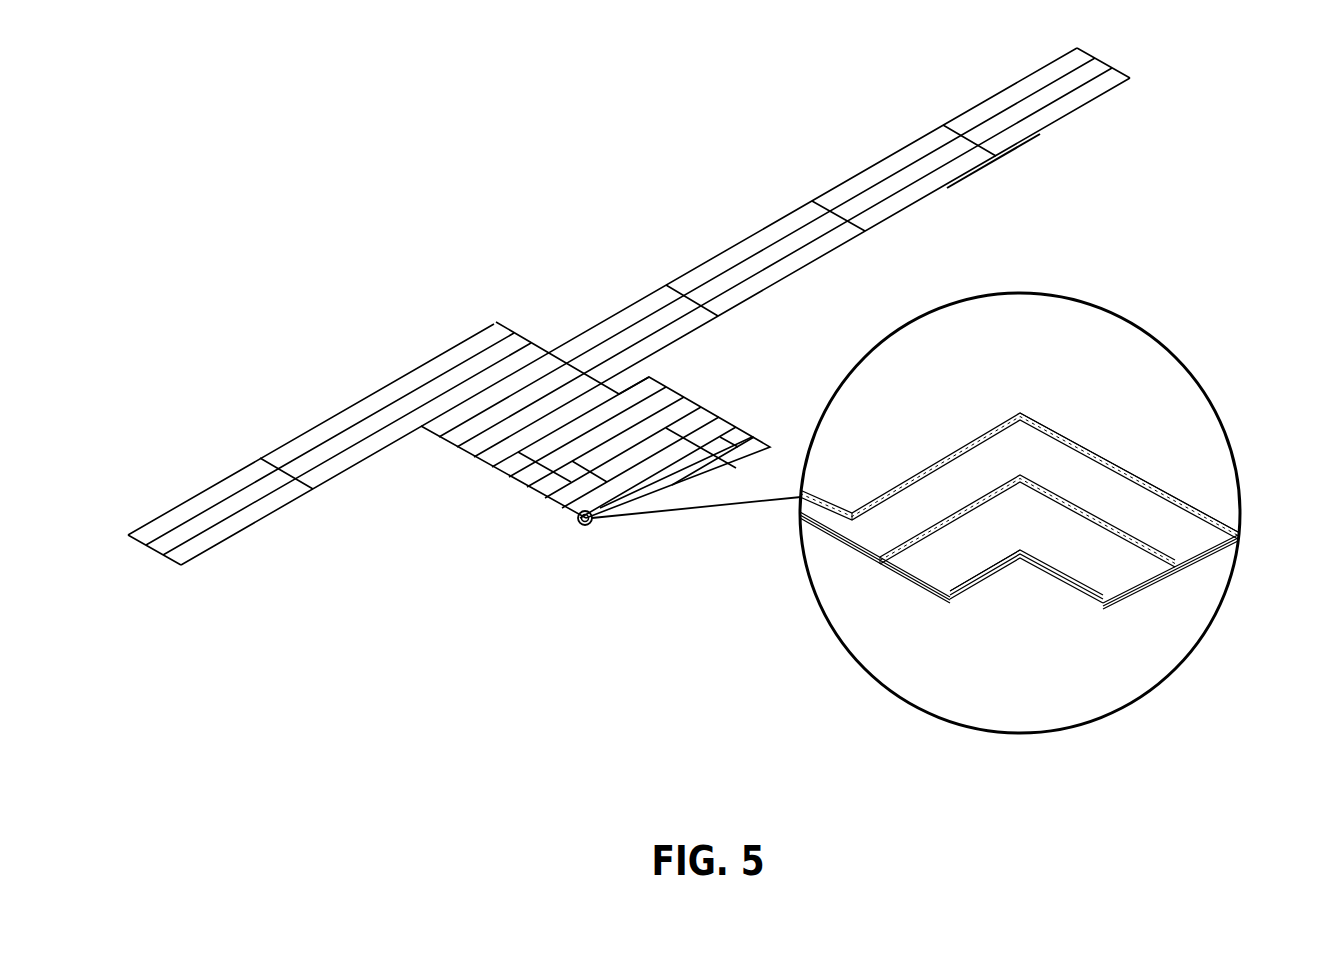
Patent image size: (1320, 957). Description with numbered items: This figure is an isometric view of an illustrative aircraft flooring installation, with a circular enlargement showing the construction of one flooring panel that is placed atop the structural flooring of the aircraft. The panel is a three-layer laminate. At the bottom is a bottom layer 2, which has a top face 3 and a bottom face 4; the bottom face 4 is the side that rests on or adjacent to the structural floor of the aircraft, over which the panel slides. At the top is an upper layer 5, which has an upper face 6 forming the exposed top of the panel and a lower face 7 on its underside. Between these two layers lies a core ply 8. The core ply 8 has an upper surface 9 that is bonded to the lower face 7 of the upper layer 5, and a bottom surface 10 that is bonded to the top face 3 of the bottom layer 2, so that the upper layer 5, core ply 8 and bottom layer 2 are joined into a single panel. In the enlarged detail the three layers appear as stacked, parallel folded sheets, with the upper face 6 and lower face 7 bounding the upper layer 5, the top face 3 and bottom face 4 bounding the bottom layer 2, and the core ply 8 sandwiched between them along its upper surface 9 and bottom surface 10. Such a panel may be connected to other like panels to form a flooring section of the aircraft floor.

The bottom layer 2 is at (1083, 598).
The top face 3 is at (1123, 572).
The bottom face 4 is at (968, 595).
The upper layer 5 is at (1127, 470).
The upper face 6 is at (1118, 378).
The lower face 7 is at (1237, 550).
The core ply 8 is at (905, 555).
The upper surface 9 is at (878, 530).
The bottom surface 10 is at (922, 573).